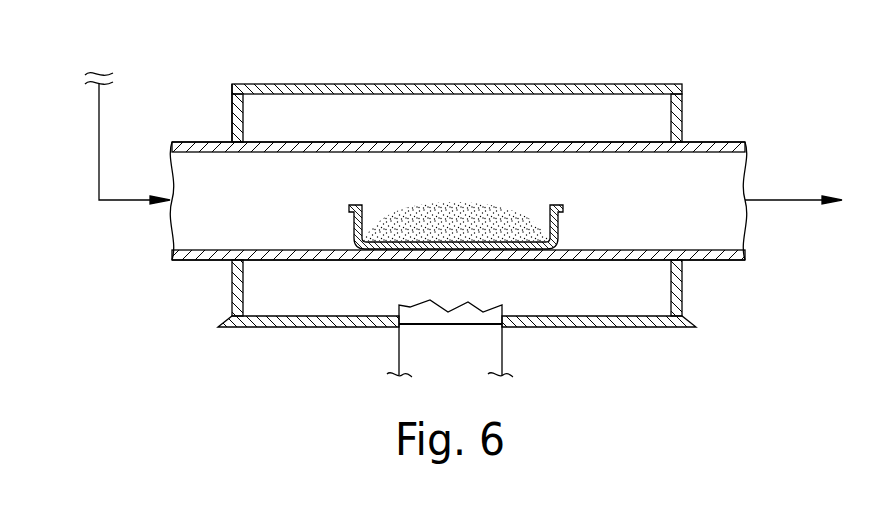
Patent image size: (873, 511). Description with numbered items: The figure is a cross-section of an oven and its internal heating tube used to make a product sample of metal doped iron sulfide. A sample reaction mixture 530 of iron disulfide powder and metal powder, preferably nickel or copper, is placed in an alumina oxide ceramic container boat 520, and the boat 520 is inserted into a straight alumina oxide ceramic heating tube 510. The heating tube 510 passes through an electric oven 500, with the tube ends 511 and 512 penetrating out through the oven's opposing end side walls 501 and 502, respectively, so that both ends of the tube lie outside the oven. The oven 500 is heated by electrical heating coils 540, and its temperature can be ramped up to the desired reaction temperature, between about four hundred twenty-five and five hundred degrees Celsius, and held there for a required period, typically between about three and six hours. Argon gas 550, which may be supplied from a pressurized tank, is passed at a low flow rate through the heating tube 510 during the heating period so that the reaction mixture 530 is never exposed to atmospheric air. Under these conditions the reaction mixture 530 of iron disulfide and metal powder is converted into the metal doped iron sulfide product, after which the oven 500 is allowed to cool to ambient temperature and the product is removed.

The electric oven 500 is at (617, 84).
The oven end side wall 501 is at (232, 96).
The oven end side wall 502 is at (682, 297).
The ceramic heating tube 510 is at (717, 142).
The tube end 511 is at (188, 142).
The tube end 512 is at (712, 262).
The ceramic container boat 520 is at (560, 230).
The reaction mixture 530 is at (463, 202).
The electrical heating coils 540 is at (503, 340).
The argon gas 550 is at (99, 152).